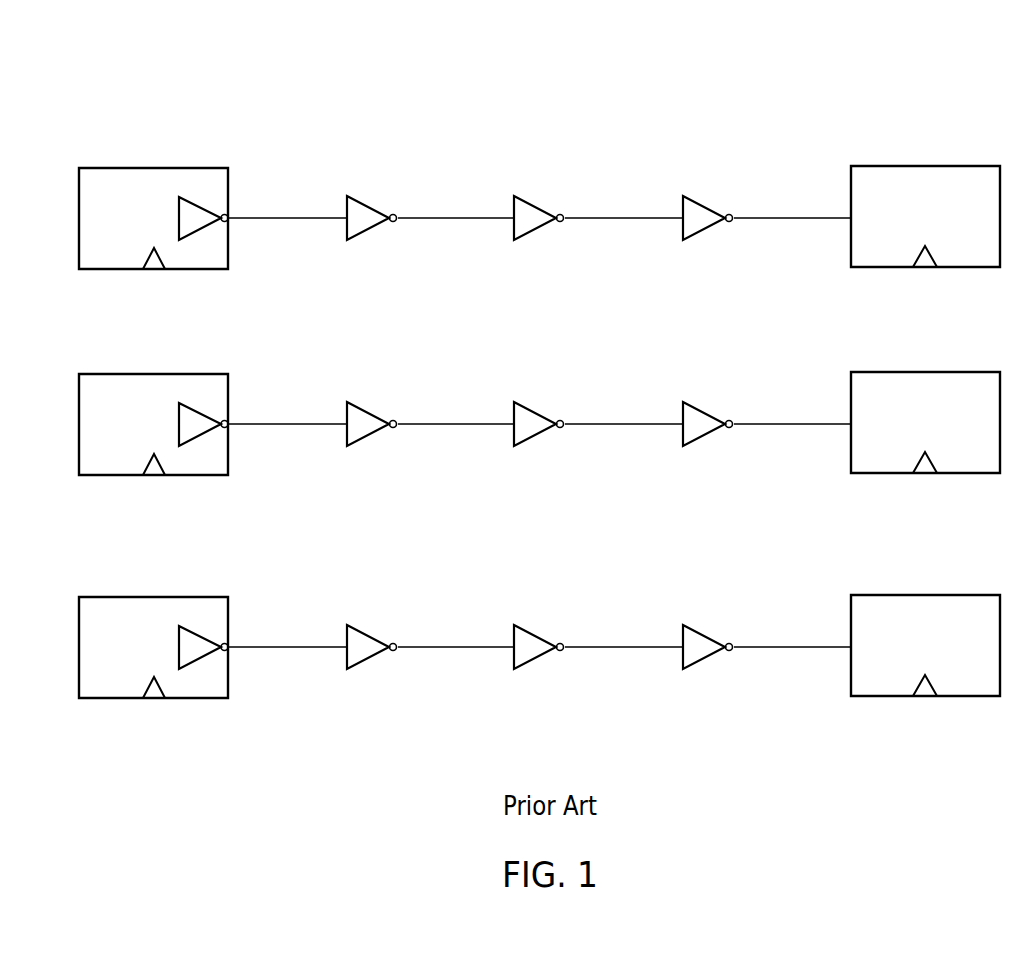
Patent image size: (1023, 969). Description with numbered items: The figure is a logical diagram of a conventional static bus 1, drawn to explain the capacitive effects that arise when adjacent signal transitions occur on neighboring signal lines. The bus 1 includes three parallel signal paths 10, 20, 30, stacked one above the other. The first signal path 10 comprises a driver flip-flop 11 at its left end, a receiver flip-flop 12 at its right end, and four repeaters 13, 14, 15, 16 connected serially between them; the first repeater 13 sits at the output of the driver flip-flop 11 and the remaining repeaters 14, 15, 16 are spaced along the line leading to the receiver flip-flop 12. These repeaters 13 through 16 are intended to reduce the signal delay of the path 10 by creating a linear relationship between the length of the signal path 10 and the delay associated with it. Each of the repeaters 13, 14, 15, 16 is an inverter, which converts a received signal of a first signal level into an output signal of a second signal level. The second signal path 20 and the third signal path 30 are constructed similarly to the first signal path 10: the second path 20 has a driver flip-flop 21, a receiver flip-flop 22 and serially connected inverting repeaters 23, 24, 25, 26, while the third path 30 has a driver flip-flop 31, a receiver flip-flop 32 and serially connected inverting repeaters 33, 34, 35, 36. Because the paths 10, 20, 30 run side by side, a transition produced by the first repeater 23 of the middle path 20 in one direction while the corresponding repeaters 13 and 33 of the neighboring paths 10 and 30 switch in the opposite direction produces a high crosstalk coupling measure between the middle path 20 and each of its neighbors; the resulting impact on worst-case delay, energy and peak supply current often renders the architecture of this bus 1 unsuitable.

The bus 1 is at (886, 58).
The signal path 10 is at (642, 146).
The driver flip-flop 11 is at (155, 168).
The receiver flip-flop 12 is at (923, 166).
The repeater 13 is at (210, 212).
The repeater 14 is at (365, 203).
The repeater 15 is at (532, 203).
The repeater 16 is at (701, 203).
The signal path 20 is at (642, 352).
The driver flip-flop 21 is at (155, 374).
The receiver flip-flop 22 is at (923, 372).
The repeater 23 is at (210, 418).
The repeater 24 is at (365, 409).
The repeater 25 is at (532, 409).
The repeater 26 is at (701, 409).
The signal path 30 is at (642, 575).
The driver flip-flop 31 is at (155, 597).
The receiver flip-flop 32 is at (923, 595).
The repeater 33 is at (210, 641).
The repeater 34 is at (365, 632).
The repeater 35 is at (532, 632).
The repeater 36 is at (701, 632).